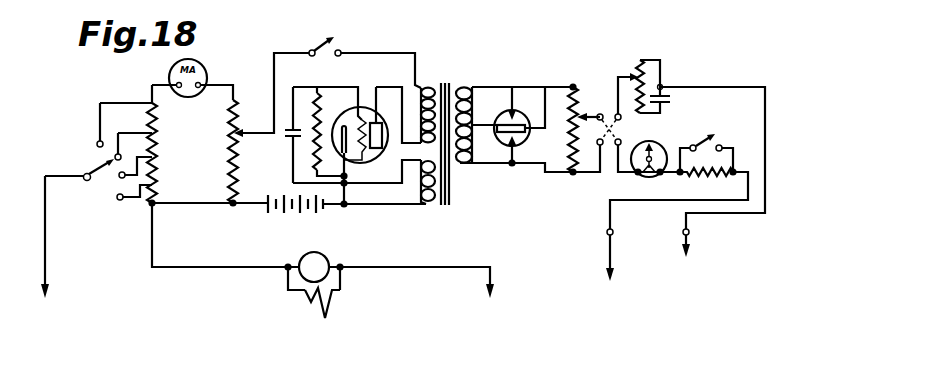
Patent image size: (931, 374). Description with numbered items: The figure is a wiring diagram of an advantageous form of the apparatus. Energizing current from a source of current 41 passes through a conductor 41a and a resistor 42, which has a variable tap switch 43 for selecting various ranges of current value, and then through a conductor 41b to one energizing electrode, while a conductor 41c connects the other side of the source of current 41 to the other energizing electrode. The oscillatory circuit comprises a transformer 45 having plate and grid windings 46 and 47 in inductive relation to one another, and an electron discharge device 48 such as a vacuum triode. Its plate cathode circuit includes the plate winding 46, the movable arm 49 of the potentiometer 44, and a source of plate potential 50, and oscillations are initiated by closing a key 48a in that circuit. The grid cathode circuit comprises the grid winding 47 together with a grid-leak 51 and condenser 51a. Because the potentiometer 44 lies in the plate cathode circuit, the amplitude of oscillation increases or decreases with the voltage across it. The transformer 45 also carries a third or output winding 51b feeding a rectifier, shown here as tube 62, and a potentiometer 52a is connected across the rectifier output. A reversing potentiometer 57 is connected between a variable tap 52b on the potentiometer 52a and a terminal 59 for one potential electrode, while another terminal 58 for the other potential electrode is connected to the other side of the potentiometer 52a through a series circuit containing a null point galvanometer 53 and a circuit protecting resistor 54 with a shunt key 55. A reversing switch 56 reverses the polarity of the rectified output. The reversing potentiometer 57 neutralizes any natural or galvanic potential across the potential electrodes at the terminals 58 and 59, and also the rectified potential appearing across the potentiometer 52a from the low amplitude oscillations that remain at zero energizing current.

The source of current 41 is at (324, 256).
The conductor 41a is at (221, 258).
The conductor 41b is at (47, 259).
The conductor 41c is at (445, 266).
The resistor 42 is at (156, 140).
The variable tap switch 43 is at (79, 185).
The potentiometer 44 is at (228, 175).
The transformer 45 is at (455, 79).
The plate winding 46 is at (423, 84).
The grid winding 47 is at (420, 178).
The electron discharge device 48 is at (377, 155).
The key 48a is at (325, 58).
The movable arm 49 is at (252, 129).
The source of plate potential 50 is at (262, 215).
The grid-leak 51 is at (320, 113).
The condenser 51a is at (288, 142).
The output winding 51b is at (475, 87).
The potentiometer 52a is at (555, 130).
The variable tap 52b is at (598, 114).
The null point galvanometer 53 is at (655, 143).
The circuit protecting resistor 54 is at (710, 176).
The shunt key 55 is at (703, 137).
The reversing switch 56 is at (609, 133).
The reversing potentiometer 57 is at (653, 65).
The terminal 58 is at (614, 232).
The terminal 59 is at (690, 232).
The rectifier tube 62 is at (517, 115).